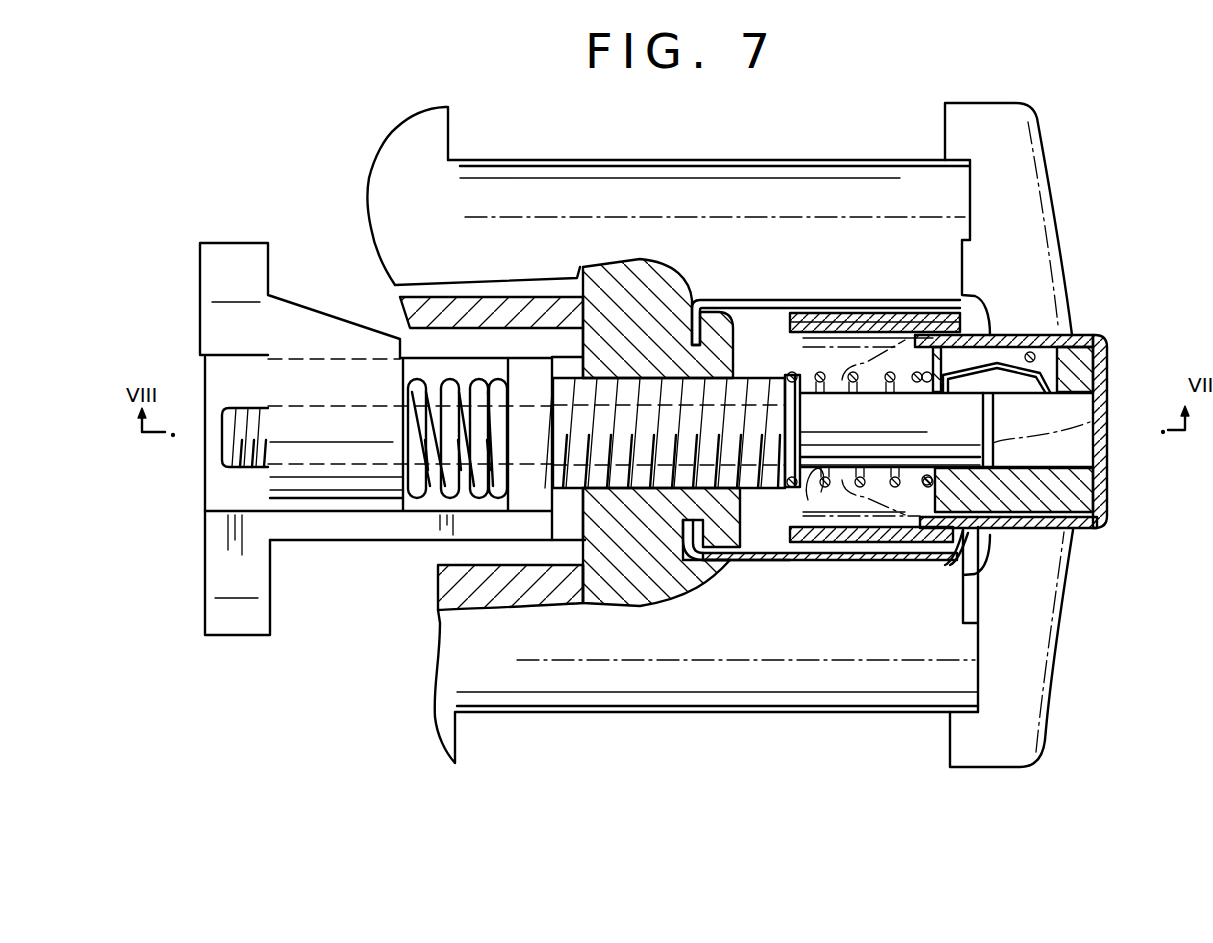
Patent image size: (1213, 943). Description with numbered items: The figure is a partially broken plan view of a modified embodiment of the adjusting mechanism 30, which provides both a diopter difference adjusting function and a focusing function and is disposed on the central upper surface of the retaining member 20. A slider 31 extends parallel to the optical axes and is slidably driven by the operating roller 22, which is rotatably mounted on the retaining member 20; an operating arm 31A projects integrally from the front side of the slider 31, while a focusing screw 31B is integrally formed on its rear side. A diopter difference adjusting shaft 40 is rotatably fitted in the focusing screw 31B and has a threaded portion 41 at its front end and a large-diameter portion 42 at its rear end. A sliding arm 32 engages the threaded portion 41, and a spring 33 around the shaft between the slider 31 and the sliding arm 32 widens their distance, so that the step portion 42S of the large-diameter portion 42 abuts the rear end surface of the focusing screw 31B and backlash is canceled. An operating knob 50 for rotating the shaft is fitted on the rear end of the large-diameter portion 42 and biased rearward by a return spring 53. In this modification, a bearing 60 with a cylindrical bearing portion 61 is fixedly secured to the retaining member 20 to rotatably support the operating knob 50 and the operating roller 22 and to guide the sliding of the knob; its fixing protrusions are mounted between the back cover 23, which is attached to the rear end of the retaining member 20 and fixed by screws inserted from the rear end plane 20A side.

The retaining member 20 is at (824, 184).
The rear end plane 20A is at (1063, 236).
The operating roller 22 is at (755, 561).
The back cover 23 is at (1025, 181).
The adjusting mechanism 30 is at (1124, 465).
The slider 31 is at (333, 528).
The operating arm 31A is at (239, 622).
The focusing screw 31B is at (565, 492).
The sliding arm 32 is at (233, 257).
The spring 33 is at (428, 508).
The diopter difference adjusting shaft 40 is at (517, 384).
The threaded portion 41 is at (222, 450).
The large-diameter portion 42 is at (780, 383).
The step portion 42S is at (808, 500).
The operating knob 50 is at (1000, 443).
The return spring 53 is at (879, 380).
The bearing 60 is at (955, 558).
The bearing portion 61 is at (855, 542).